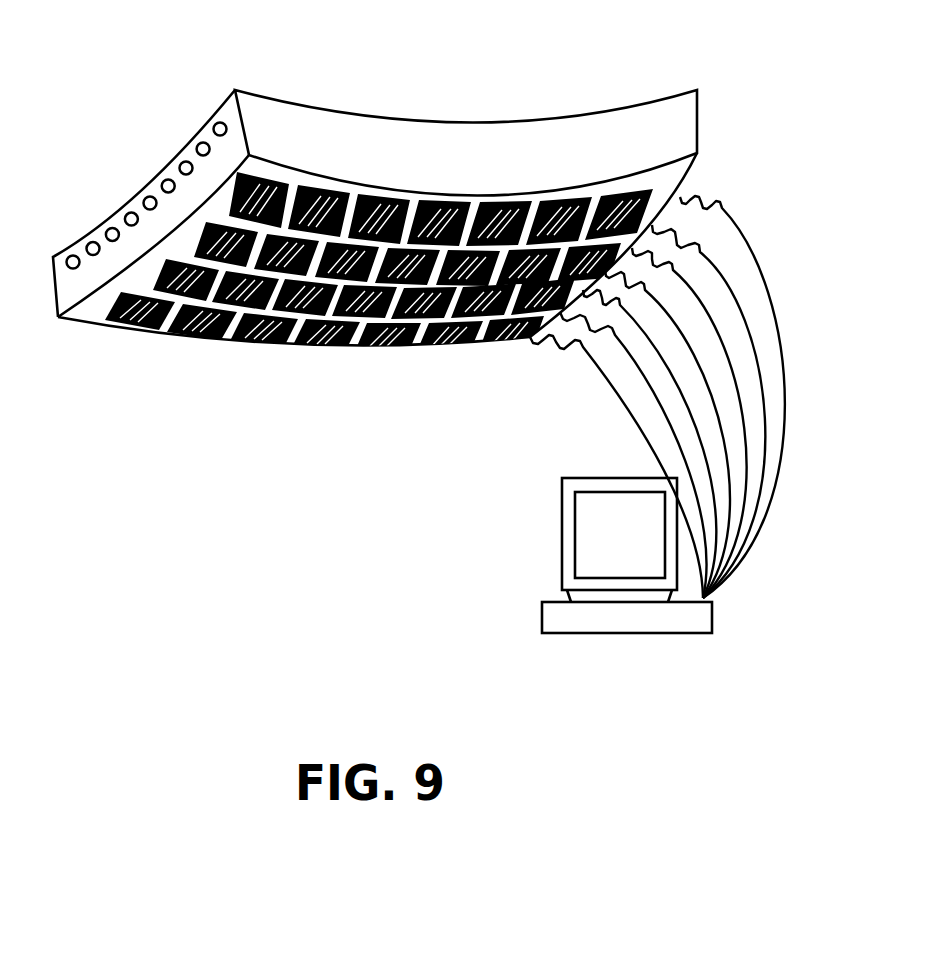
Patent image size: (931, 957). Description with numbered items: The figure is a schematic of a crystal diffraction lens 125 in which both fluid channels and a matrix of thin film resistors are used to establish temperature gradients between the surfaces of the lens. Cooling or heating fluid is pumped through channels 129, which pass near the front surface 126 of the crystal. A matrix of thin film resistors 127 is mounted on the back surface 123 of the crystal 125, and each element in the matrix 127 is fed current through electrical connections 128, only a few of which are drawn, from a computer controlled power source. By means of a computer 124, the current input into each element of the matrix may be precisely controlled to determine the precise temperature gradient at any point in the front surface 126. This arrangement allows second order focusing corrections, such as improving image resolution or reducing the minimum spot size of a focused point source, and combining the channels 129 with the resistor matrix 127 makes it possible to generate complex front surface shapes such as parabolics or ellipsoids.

The back surface 123 is at (372, 190).
The computer 124 is at (562, 557).
The crystal diffraction lens 125 is at (697, 128).
The front surface 126 is at (512, 118).
The matrix of thin film resistors 127 is at (140, 320).
The electrical connections 128 is at (730, 205).
The channels 129 is at (158, 178).